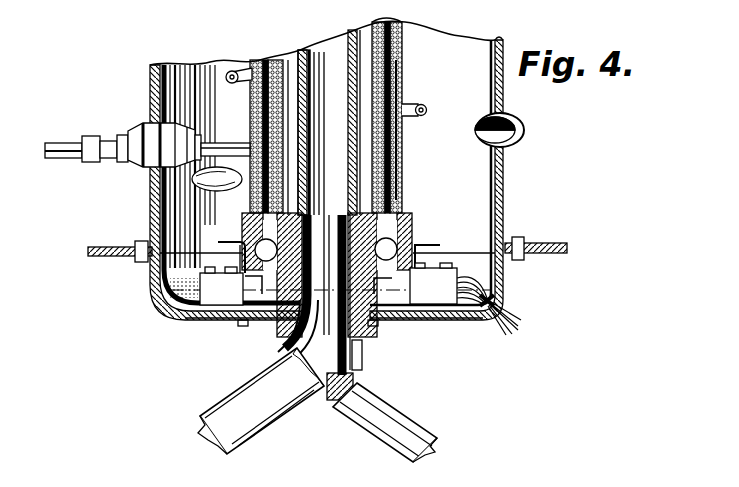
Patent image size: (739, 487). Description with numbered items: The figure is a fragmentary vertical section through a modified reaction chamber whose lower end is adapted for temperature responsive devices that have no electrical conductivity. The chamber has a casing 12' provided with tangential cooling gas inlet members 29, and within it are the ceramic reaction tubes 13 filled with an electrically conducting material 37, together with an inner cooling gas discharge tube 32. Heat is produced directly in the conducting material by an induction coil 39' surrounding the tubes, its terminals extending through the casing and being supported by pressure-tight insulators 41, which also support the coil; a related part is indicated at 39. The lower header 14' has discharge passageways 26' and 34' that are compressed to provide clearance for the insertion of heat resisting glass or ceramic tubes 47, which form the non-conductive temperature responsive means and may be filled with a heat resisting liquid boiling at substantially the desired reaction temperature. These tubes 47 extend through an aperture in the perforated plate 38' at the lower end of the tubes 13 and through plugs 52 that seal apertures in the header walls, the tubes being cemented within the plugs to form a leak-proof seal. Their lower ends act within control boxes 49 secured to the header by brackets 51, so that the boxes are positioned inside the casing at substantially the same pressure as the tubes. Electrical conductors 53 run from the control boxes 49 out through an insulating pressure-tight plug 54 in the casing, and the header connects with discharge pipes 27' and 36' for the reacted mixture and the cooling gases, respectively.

The casing 12' is at (327, 173).
The ceramic reaction tubes 13 is at (257, 108).
The heat resisting glass or ceramic tubes 47 is at (251, 64).
The inner cooling gas discharge tube 32 is at (304, 58).
The electrically conducting material 37 is at (397, 25).
The induction coil 39' is at (434, 110).
The coil insulation 39 is at (420, 130).
The tangential cooling gas inlet members 29 is at (524, 130).
The pressure-tight insulators 41 is at (143, 163).
The perforated plate 38' is at (351, 266).
The brackets 51 is at (246, 240).
The plugs 52 is at (250, 317).
The control boxes 49 is at (205, 318).
The electrical conductors 53 is at (496, 280).
The insulating pressure-tight plug 54 is at (505, 300).
The discharge passageway 26' is at (357, 307).
The lower header 14' is at (387, 300).
The discharge passageway 34' is at (280, 332).
The discharge pipe 36' is at (255, 401).
The discharge pipe 27' is at (399, 422).